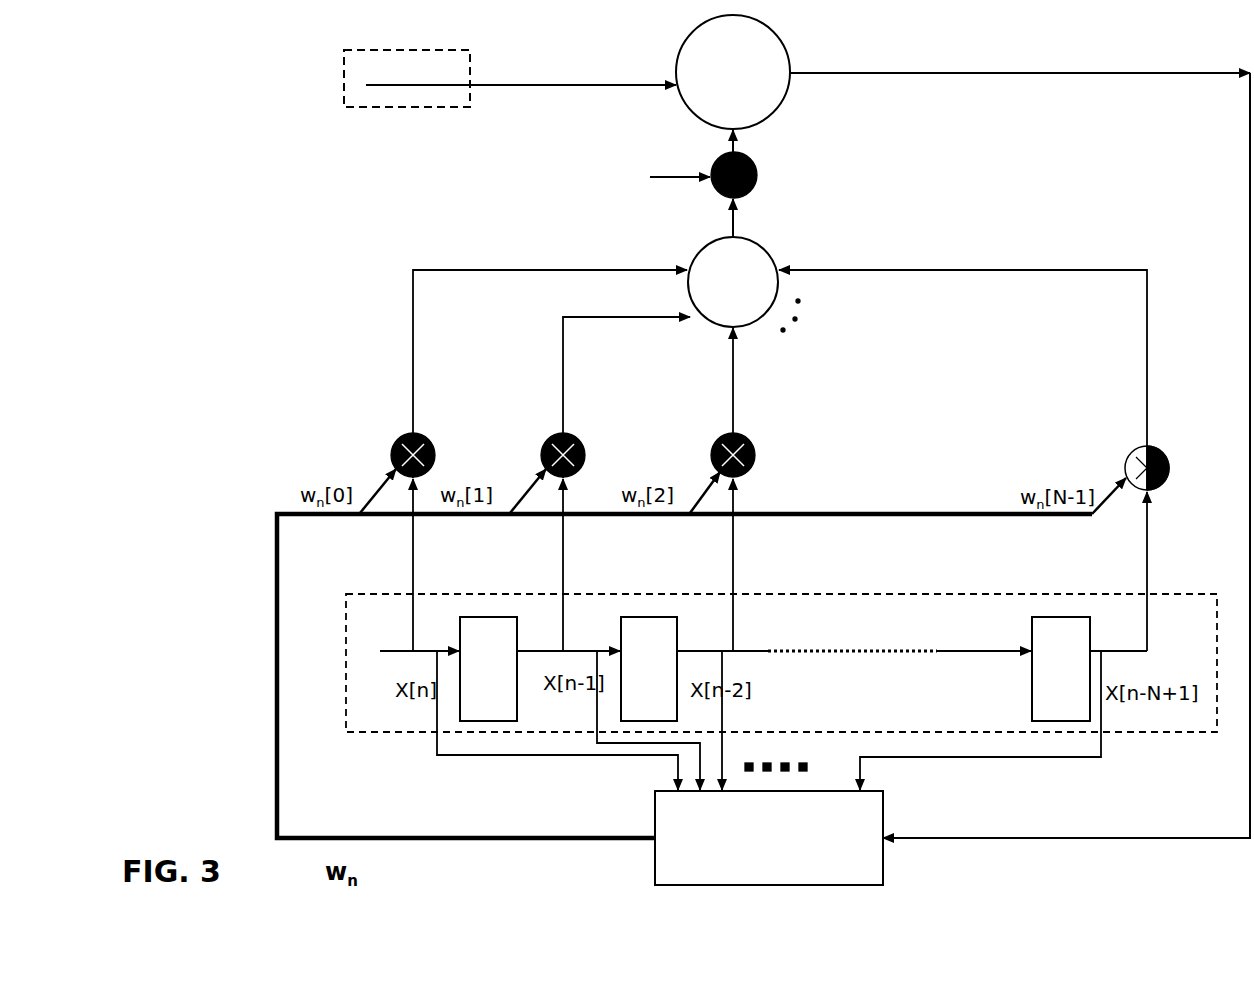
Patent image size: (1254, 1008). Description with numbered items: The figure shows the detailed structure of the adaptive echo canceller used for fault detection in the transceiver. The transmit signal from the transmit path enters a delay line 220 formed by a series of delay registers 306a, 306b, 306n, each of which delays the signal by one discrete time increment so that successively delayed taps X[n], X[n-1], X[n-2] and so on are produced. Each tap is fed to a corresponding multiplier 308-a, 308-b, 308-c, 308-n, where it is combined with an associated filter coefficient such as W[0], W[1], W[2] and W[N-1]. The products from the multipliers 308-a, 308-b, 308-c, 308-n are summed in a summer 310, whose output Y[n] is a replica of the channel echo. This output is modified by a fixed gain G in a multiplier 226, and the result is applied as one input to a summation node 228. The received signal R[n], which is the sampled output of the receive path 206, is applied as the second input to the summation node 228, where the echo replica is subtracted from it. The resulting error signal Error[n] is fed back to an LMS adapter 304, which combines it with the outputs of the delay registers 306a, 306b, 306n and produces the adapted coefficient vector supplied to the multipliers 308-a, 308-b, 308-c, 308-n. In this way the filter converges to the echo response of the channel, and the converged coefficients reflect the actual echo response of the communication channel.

The receive path 206 is at (428, 110).
The summation node 228 is at (792, 94).
The multiplier 226 is at (758, 174).
The summer 310 is at (758, 323).
The multiplier 308-a is at (430, 433).
The multiplier 308-b is at (580, 433).
The multiplier 308-c is at (760, 426).
The multiplier 308-n is at (1165, 448).
The delay line 220 is at (366, 592).
The delay register 306a is at (487, 617).
The delay register 306b is at (649, 617).
The delay register 306n is at (1061, 617).
The LMS adapter 304 is at (886, 802).